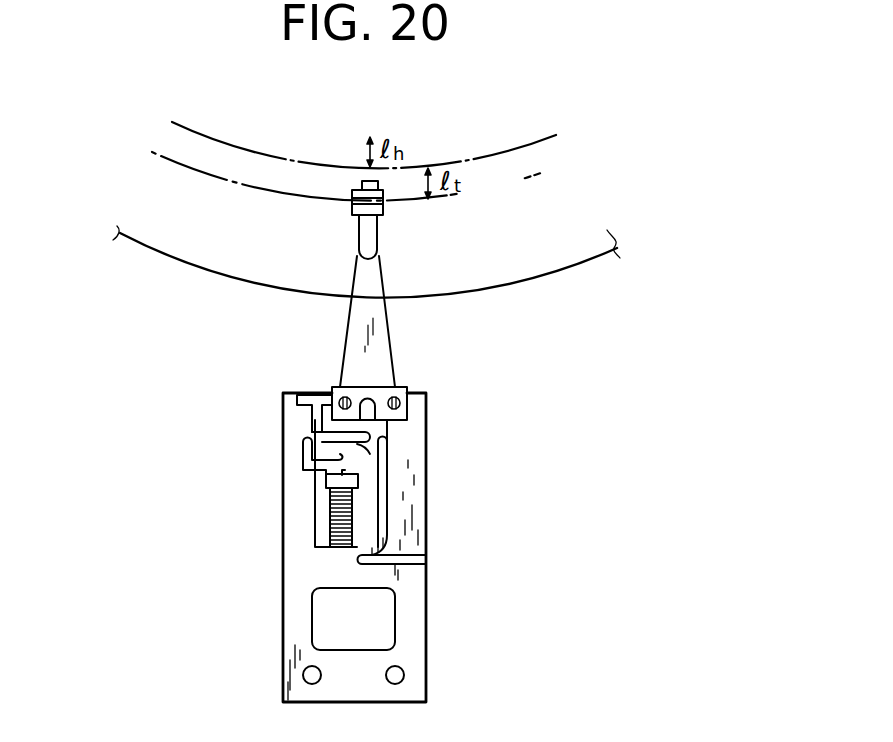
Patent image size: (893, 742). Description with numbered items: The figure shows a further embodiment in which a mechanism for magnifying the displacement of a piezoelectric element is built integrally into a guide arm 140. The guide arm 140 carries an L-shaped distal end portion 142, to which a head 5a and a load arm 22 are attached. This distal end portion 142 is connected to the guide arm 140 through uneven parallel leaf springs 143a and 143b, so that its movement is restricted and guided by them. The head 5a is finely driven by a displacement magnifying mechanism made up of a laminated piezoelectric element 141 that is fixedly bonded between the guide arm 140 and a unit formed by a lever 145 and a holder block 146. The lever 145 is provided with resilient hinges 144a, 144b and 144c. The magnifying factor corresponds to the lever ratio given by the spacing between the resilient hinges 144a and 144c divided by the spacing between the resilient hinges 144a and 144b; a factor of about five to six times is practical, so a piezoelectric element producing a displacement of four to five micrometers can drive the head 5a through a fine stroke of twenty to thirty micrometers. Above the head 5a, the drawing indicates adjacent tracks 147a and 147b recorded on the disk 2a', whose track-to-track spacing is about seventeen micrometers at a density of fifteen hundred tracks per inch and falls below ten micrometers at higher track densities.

The track 147b is at (556, 135).
The track 147a is at (565, 165).
The disk 2a' is at (392, 278).
The head 5a is at (353, 203).
The load arm 22 is at (377, 340).
The guide arm 140 is at (408, 623).
The L-shaped distal end portion 142 is at (407, 492).
The leaf spring 143b is at (374, 550).
The leaf spring 143a is at (307, 396).
The resilient hinge 144a is at (322, 434).
The resilient hinge 144b is at (345, 462).
The resilient hinge 144c is at (386, 453).
The lever 145 is at (364, 450).
The holder block 146 is at (326, 480).
The laminated piezoelectric element 141 is at (329, 518).